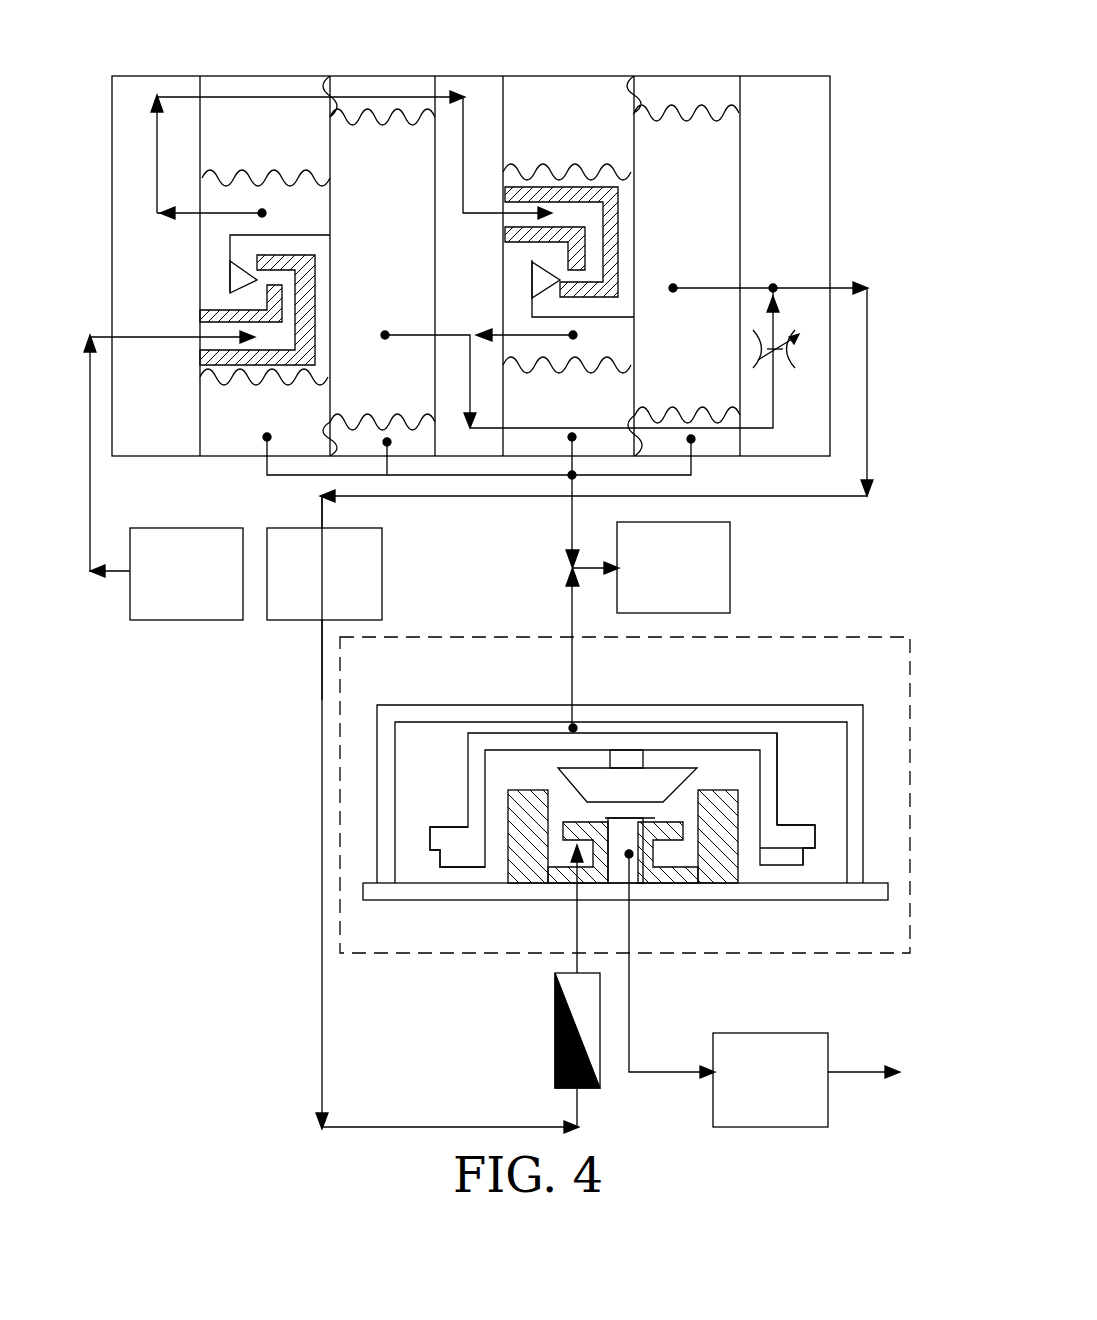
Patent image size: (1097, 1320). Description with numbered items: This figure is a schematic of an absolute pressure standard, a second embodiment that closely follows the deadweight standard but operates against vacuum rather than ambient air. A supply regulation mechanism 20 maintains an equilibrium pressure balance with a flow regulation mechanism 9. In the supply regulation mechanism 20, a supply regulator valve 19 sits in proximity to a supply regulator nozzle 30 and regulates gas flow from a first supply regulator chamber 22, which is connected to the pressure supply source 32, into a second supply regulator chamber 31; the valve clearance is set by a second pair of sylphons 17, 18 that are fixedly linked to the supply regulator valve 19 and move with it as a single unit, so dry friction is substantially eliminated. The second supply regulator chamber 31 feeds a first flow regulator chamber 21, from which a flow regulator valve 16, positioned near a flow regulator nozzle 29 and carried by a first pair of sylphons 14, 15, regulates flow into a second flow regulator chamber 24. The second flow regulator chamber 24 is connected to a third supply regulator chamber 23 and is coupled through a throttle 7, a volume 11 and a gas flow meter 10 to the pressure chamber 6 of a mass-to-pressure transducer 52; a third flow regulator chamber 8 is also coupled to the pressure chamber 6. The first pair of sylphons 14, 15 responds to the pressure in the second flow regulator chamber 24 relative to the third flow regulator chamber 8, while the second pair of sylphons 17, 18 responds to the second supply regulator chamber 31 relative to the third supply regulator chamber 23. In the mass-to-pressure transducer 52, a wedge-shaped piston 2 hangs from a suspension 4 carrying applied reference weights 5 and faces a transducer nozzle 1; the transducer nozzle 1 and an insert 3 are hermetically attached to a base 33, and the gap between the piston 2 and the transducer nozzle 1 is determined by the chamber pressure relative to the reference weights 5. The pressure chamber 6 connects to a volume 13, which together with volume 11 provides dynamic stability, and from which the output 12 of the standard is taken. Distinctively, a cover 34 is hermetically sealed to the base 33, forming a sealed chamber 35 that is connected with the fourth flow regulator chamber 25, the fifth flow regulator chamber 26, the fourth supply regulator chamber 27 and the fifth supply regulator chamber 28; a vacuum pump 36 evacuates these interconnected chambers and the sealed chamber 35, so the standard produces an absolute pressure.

The transducer nozzle 1 is at (727, 872).
The piston 2 is at (620, 783).
The insert 3 is at (670, 828).
The suspension 4 is at (713, 740).
The applied reference weights 5 is at (795, 840).
The pressure chamber 6 is at (778, 733).
The throttle 7 is at (780, 333).
The third flow regulator chamber 8 is at (718, 280).
The flow regulation mechanism 9 is at (807, 385).
The gas flow meter 10 is at (592, 1045).
The volume 11 is at (313, 597).
The output signal 12 is at (843, 1067).
The volume 13 is at (733, 1112).
The sylphon of first pair 14 is at (718, 120).
The sylphon of first pair 15 is at (553, 165).
The flow regulator valve 16 is at (540, 273).
The sylphon of second pair 17 is at (400, 115).
The sylphon of second pair 18 is at (288, 165).
The supply regulator valve 19 is at (237, 277).
The supply regulation mechanism 20 is at (232, 458).
The first flow regulator chamber 21 is at (578, 217).
The first supply regulator chamber 22 is at (292, 312).
The third supply regulator chamber 23 is at (365, 155).
The second flow regulator chamber 24 is at (603, 175).
The fourth flow regulator chamber 25 is at (717, 93).
The fifth flow regulator chamber 26 is at (538, 107).
The fourth supply regulator chamber 27 is at (417, 88).
The fifth supply regulator chamber 28 is at (235, 125).
The flow regulator nozzle 29 is at (597, 283).
The supply regulator nozzle 30 is at (207, 363).
The second supply regulator chamber 31 is at (225, 198).
The pressure supply source 32 is at (200, 582).
The base 33 is at (647, 898).
The cover 34 is at (443, 705).
The sealed chamber 35 is at (408, 833).
The vacuum pump 36 is at (730, 580).
The mass-to-pressure transducer 52 is at (445, 953).